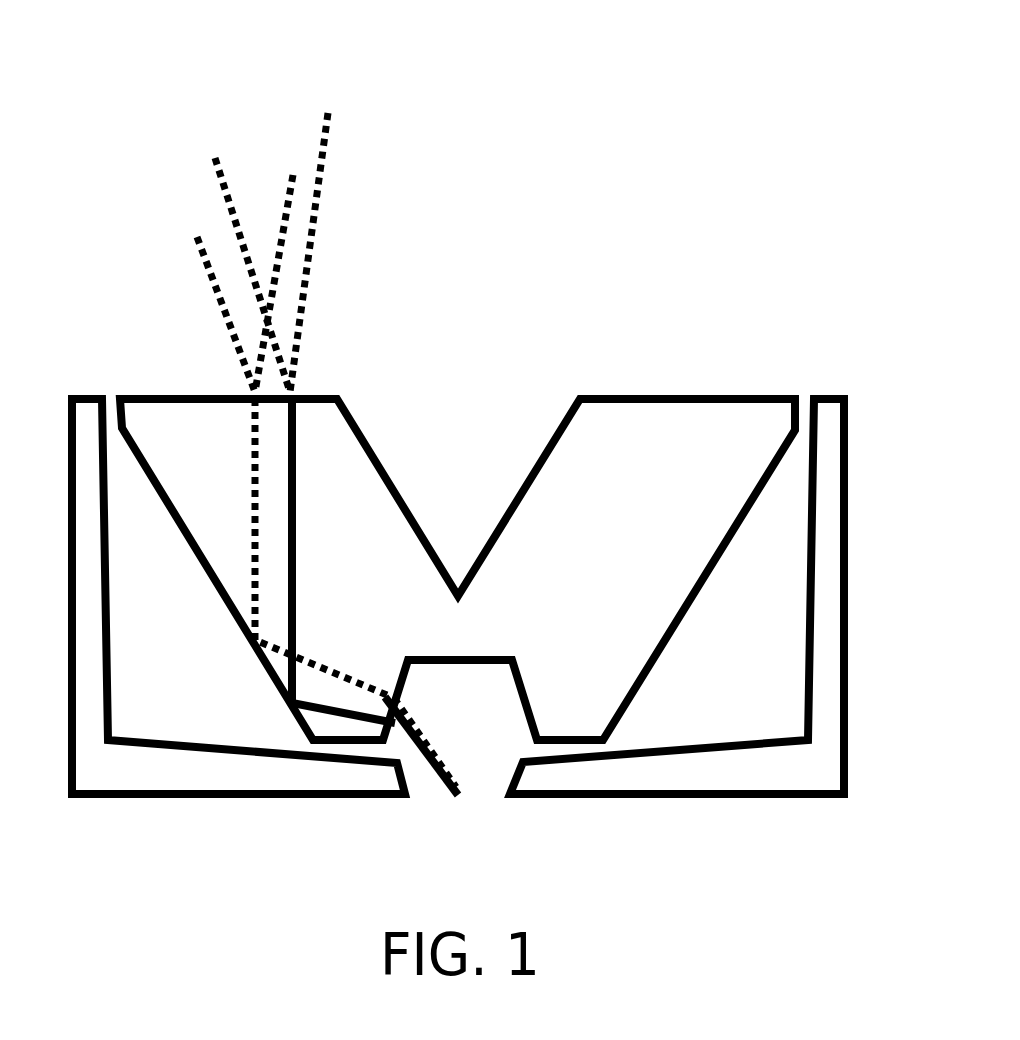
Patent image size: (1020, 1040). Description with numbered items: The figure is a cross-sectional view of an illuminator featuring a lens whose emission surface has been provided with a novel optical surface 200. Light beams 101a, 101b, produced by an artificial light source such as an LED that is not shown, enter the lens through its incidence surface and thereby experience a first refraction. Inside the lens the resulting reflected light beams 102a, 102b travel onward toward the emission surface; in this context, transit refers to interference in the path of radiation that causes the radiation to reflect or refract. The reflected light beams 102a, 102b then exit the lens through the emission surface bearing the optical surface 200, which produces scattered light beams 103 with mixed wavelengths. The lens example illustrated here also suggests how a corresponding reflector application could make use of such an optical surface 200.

The optical surface 200 is at (674, 397).
The scattered light beams 103 is at (261, 243).
The reflected light beam 102a is at (295, 493).
The reflected light beam 102b is at (255, 462).
The light beam 101a is at (437, 773).
The light beam 101b is at (421, 737).